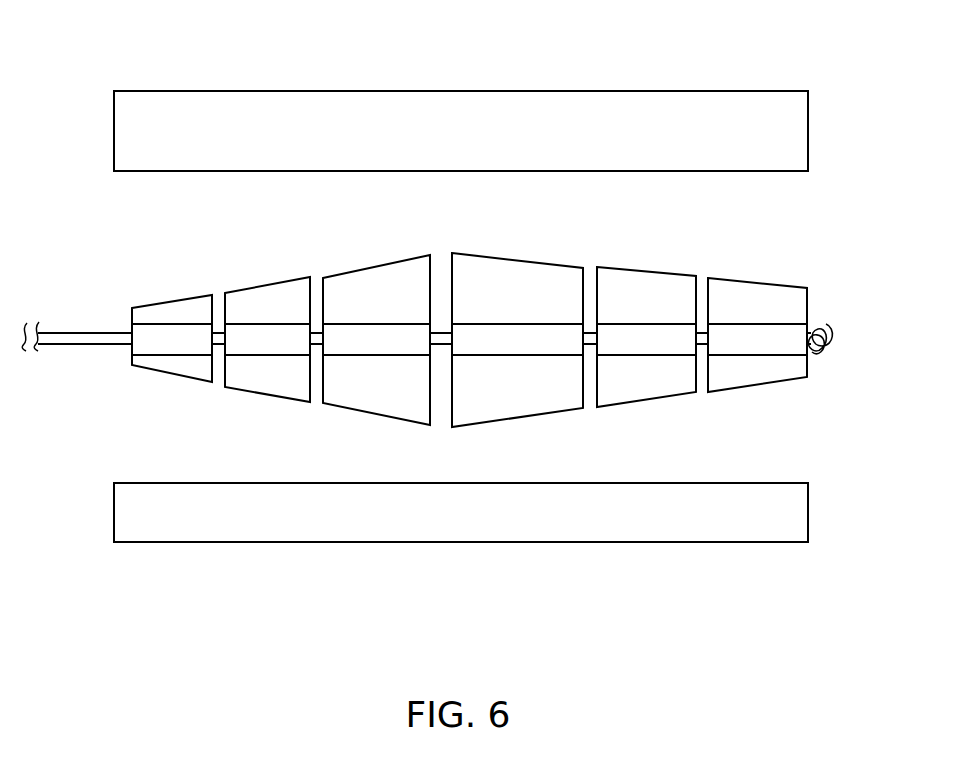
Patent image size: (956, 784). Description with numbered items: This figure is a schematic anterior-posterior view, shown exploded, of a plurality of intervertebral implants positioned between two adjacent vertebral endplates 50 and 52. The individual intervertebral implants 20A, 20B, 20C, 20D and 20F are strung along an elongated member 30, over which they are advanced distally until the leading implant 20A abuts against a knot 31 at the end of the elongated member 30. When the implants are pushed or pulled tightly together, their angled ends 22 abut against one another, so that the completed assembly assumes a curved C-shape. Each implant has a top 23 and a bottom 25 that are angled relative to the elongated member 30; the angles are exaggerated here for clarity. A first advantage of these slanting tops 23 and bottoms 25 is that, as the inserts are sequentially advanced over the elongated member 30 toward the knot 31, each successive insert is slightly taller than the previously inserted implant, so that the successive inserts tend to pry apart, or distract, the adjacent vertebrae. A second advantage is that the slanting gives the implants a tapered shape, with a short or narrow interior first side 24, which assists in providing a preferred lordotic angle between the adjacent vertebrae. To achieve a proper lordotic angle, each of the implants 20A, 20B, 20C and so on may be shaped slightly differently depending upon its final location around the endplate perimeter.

The vertebral endplate 52 is at (453, 123).
The vertebral endplate 50 is at (472, 523).
The elongated member 30 is at (68, 337).
The knot 31 is at (832, 330).
The intervertebral implant 20A is at (756, 401).
The intervertebral implant 20B is at (656, 409).
The intervertebral implant 20C is at (266, 403).
The intervertebral implant 20D is at (380, 424).
The tapered segment 20F is at (162, 381).
The angled end 22 is at (220, 297).
The top 23 is at (480, 250).
The first side 24 is at (163, 340).
The bottom 25 is at (500, 420).